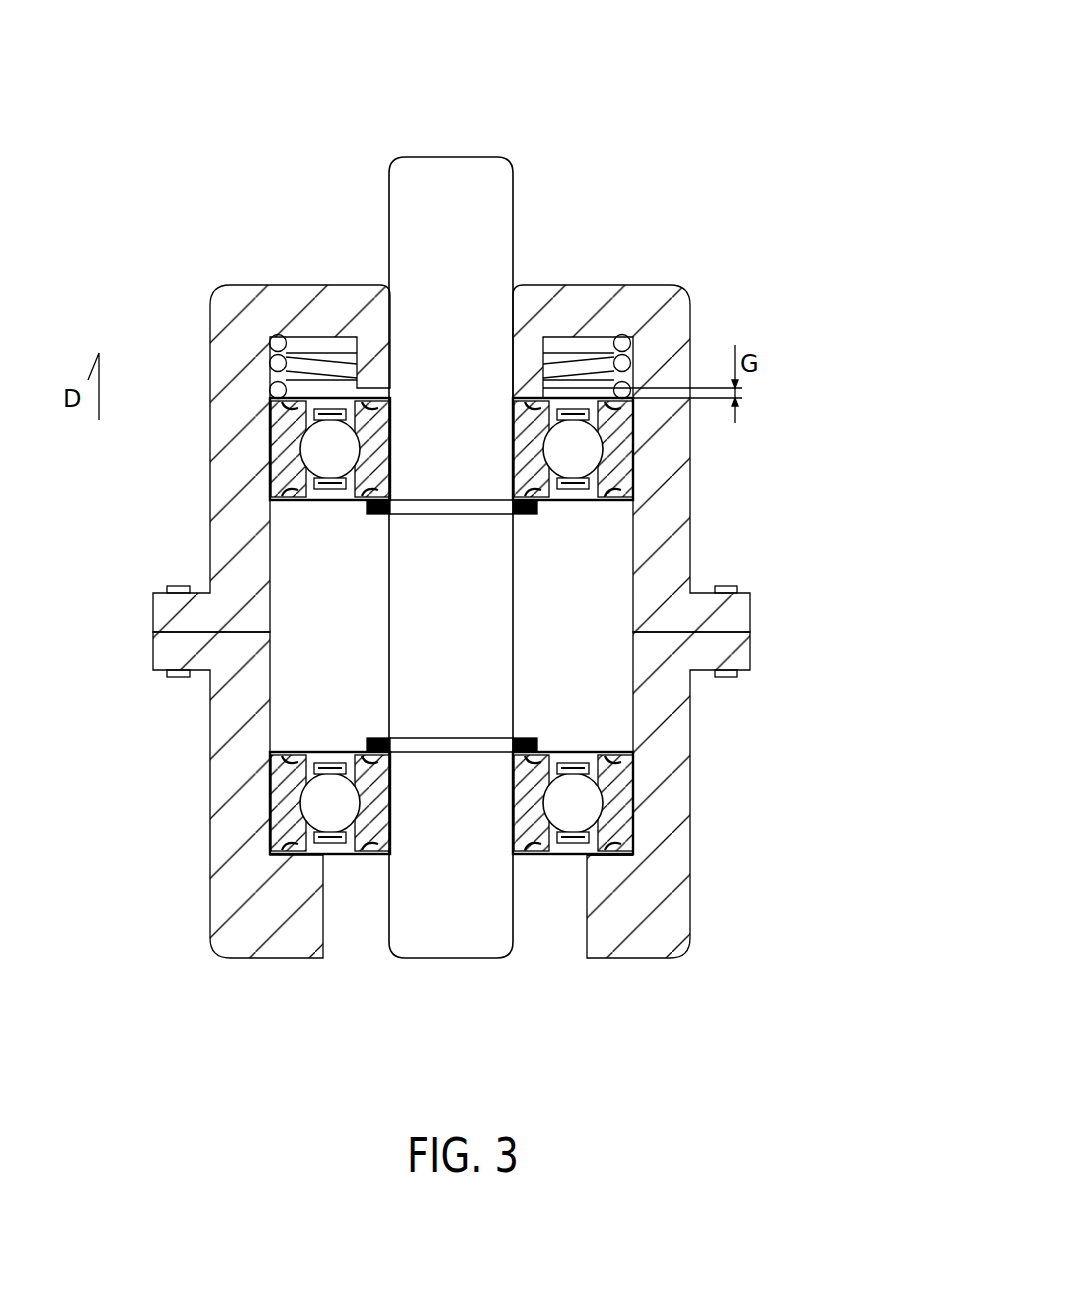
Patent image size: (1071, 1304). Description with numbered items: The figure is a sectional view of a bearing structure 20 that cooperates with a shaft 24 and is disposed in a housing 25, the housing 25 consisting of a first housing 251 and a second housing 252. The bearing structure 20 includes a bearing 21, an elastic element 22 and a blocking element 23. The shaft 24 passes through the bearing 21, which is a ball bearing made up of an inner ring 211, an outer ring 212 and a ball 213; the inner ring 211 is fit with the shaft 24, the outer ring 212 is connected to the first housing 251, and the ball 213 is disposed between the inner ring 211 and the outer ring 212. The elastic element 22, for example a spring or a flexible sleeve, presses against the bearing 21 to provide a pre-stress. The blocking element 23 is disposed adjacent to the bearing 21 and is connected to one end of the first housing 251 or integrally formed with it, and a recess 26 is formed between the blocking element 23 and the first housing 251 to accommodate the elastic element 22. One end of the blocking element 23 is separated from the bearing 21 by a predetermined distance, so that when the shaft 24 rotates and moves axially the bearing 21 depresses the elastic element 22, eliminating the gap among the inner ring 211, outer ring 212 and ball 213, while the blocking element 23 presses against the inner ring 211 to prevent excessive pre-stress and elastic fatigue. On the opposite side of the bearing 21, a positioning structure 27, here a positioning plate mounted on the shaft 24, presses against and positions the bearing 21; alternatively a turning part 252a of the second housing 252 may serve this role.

The bearing structure 20 is at (555, 435).
The bearing 21 is at (571, 435).
The elastic element 22 is at (282, 348).
The blocking element 23 is at (531, 342).
The shaft 24 is at (452, 177).
The housing 25 is at (545, 633).
The recess 26 is at (633, 357).
The positioning structure 27 is at (440, 517).
The inner ring 211 is at (535, 500).
The outer ring 212 is at (630, 458).
The ball 213 is at (590, 443).
The first housing 251 is at (683, 557).
The second housing 252 is at (683, 725).
The turning part 252a is at (633, 857).